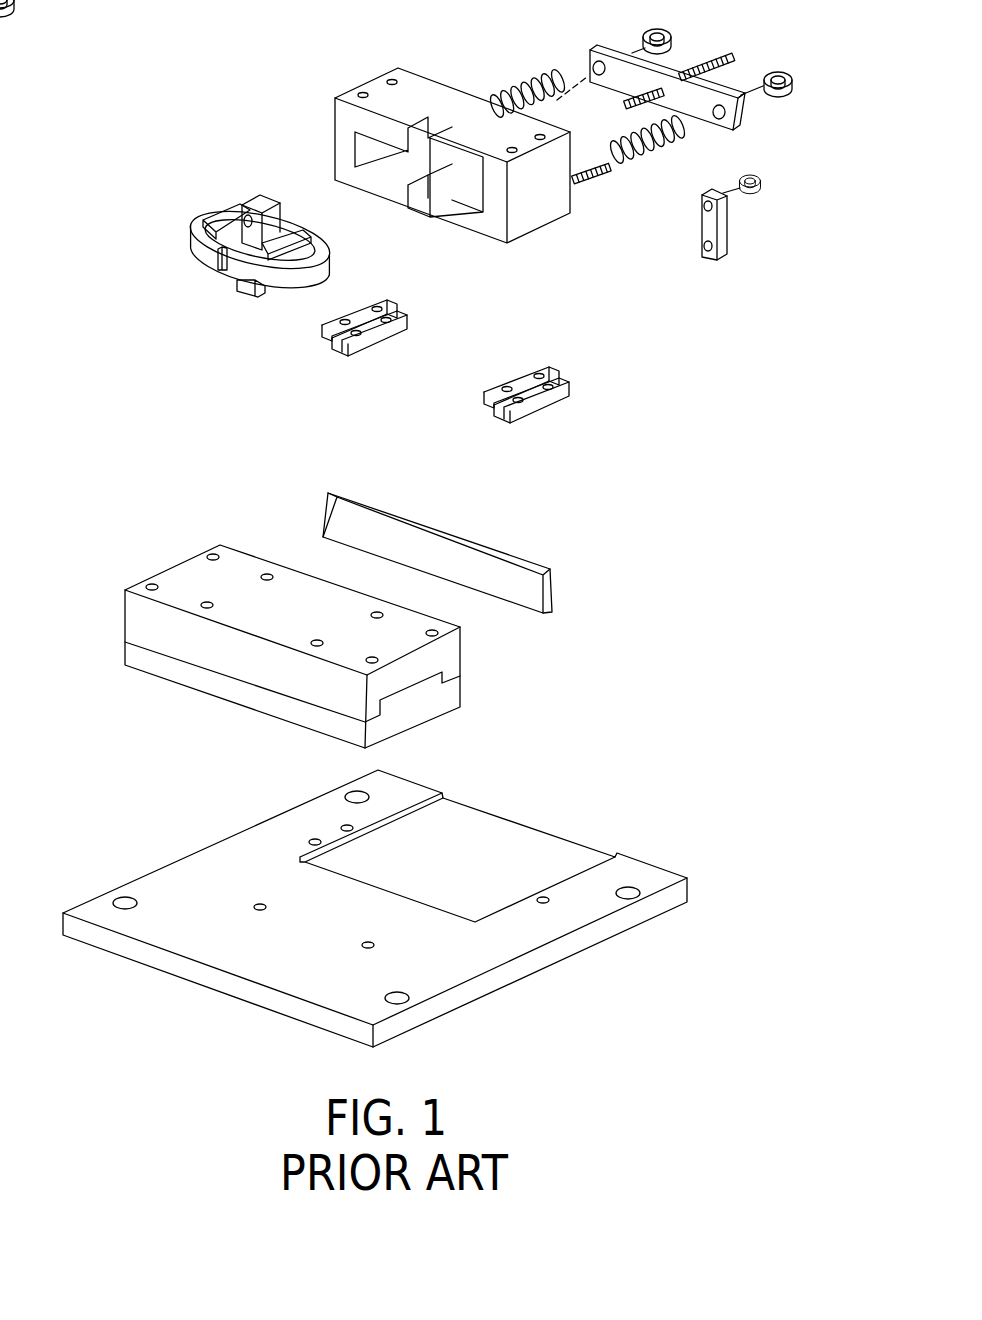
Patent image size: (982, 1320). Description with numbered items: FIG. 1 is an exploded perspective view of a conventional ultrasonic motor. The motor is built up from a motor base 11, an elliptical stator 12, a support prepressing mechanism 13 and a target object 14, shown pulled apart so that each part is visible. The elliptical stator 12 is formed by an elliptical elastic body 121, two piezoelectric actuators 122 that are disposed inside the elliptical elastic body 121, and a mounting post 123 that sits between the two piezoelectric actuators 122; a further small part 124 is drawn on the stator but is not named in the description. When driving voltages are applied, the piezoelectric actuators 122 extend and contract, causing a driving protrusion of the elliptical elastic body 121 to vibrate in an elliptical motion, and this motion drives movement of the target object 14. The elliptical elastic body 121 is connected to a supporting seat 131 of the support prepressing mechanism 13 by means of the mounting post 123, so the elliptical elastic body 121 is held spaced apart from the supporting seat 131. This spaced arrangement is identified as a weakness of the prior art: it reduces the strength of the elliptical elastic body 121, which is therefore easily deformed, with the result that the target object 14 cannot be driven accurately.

The motor base 11 is at (187, 850).
The elliptical stator 12 is at (234, 235).
The elliptical elastic body 121 is at (188, 240).
The piezoelectric actuators 122 is at (217, 217).
The mounting post 123 is at (258, 202).
The tab 124 is at (210, 267).
The support prepressing mechanism 13 is at (396, 130).
The supporting seat 131 is at (375, 83).
The target object 14 is at (188, 570).